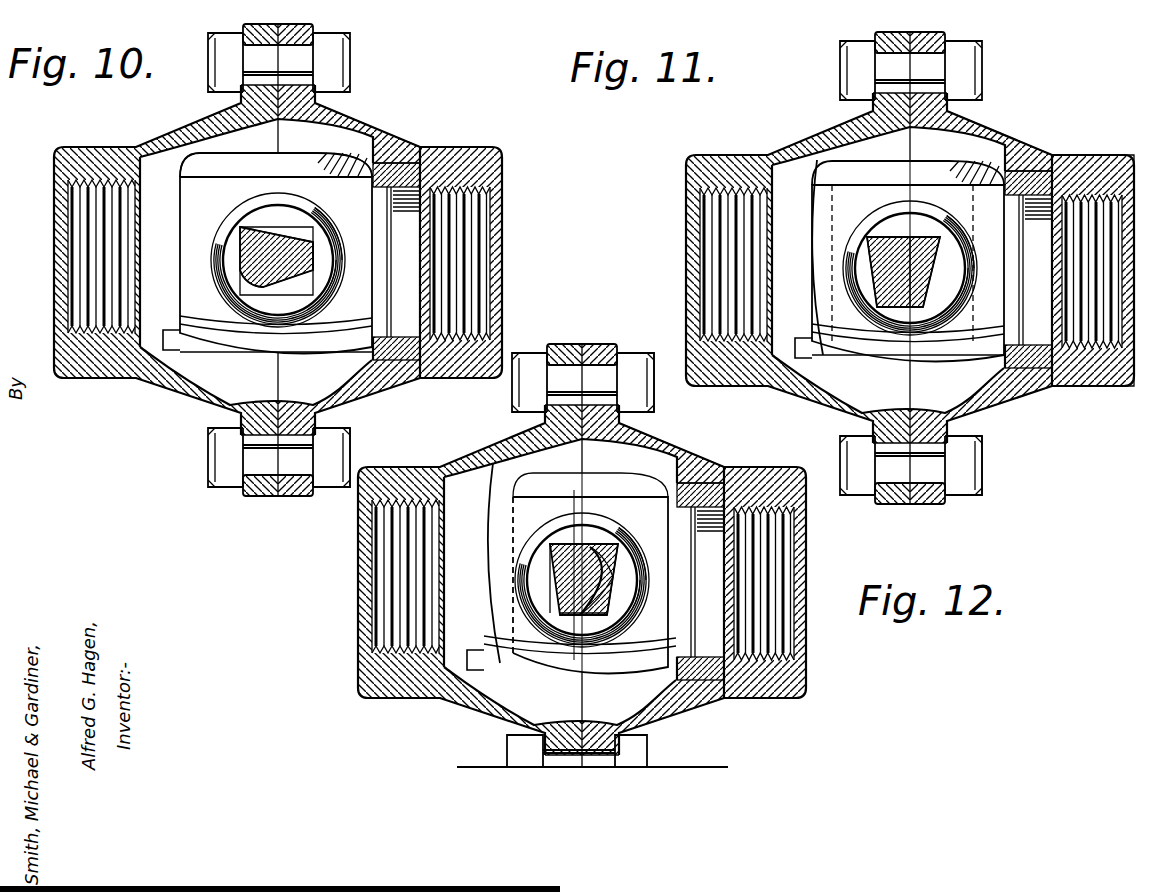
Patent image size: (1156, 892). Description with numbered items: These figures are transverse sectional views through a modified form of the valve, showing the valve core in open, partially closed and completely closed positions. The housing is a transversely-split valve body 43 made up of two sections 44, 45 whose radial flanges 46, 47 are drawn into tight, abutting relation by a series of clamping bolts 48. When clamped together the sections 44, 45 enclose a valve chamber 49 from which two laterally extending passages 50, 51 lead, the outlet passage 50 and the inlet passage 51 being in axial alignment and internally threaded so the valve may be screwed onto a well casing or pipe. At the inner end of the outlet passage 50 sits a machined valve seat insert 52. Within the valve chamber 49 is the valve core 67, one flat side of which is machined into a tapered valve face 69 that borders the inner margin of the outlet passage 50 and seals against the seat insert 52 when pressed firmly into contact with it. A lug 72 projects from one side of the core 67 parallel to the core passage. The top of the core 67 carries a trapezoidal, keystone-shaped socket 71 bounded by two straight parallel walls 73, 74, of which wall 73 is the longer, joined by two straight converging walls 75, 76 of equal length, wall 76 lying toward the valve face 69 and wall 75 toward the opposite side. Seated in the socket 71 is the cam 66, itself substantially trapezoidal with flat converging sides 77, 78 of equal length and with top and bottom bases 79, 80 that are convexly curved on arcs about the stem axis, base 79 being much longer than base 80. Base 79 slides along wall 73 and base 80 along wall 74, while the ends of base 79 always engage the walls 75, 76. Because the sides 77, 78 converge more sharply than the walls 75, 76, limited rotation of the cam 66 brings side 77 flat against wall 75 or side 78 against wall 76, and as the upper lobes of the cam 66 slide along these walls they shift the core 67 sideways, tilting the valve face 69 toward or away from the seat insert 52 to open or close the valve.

In FIG. 10, the valve body 43 is at (400, 135).
In FIG. 11, the valve body 43 is at (1035, 145).
In FIG. 12, the valve body 43 is at (688, 447).
In FIG. 10, the valve body section 44 is at (353, 130).
In FIG. 11, the valve body section 44 is at (982, 135).
In FIG. 12, the valve body section 44 is at (660, 433).
In FIG. 10, the valve body section 45 is at (200, 122).
In FIG. 11, the valve body section 45 is at (827, 138).
In FIG. 12, the valve body section 45 is at (480, 442).
In FIG. 10, the radial flange 46 is at (233, 497).
In FIG. 11, the radial flange 46 is at (893, 503).
In FIG. 12, the radial flange 46 is at (553, 345).
In FIG. 10, the radial flange 47 is at (272, 495).
In FIG. 11, the radial flange 47 is at (945, 503).
In FIG. 12, the radial flange 47 is at (612, 345).
In FIG. 10, the clamping bolt 48 is at (330, 62).
In FIG. 11, the clamping bolt 48 is at (963, 70).
In FIG. 12, the clamping bolt 48 is at (602, 352).
In FIG. 11, the valve chamber 49 is at (995, 218).
In FIG. 10, the outlet passage 50 is at (460, 265).
In FIG. 11, the outlet passage 50 is at (1000, 270).
In FIG. 12, the outlet passage 50 is at (797, 572).
In FIG. 10, the inlet passage 51 is at (67, 260).
In FIG. 12, the inlet passage 51 is at (370, 580).
In FIG. 10, the valve seat insert 52 is at (413, 167).
In FIG. 11, the valve seat insert 52 is at (1043, 177).
In FIG. 12, the valve seat insert 52 is at (727, 470).
In FIG. 10, the cam 66 is at (328, 232).
In FIG. 11, the cam 66 is at (940, 305).
In FIG. 12, the cam 66 is at (610, 575).
In FIG. 10, the valve core 67 is at (340, 323).
In FIG. 11, the valve core 67 is at (953, 363).
In FIG. 12, the valve core 67 is at (557, 667).
In FIG. 10, the valve face 69 is at (276, 163).
In FIG. 12, the valve face 69 is at (670, 532).
In FIG. 10, the socket 71 is at (276, 368).
In FIG. 11, the socket 71 is at (892, 308).
In FIG. 12, the socket 71 is at (607, 617).
In FIG. 10, the lug 72 is at (170, 330).
In FIG. 11, the lug 72 is at (817, 167).
In FIG. 12, the lug 72 is at (503, 480).
In FIG. 10, the socket wall 73 is at (240, 257).
In FIG. 11, the socket wall 73 is at (882, 237).
In FIG. 12, the socket wall 73 is at (590, 547).
In FIG. 10, the socket wall 74 is at (313, 263).
In FIG. 11, the socket wall 74 is at (910, 308).
In FIG. 12, the socket wall 74 is at (593, 617).
In FIG. 10, the socket wall 75 is at (258, 297).
In FIG. 11, the socket wall 75 is at (840, 288).
In FIG. 12, the socket wall 75 is at (550, 575).
In FIG. 10, the socket wall 76 is at (258, 243).
In FIG. 11, the socket wall 76 is at (940, 237).
In FIG. 12, the socket wall 76 is at (617, 565).
In FIG. 10, the cam side 77 is at (303, 277).
In FIG. 11, the cam side 77 is at (877, 305).
In FIG. 12, the cam side 77 is at (557, 590).
In FIG. 10, the cam side 78 is at (288, 238).
In FIG. 11, the cam side 78 is at (932, 303).
In FIG. 12, the cam side 78 is at (610, 602).
In FIG. 10, the cam base 79 is at (245, 285).
In FIG. 11, the cam base 79 is at (865, 233).
In FIG. 12, the cam base 79 is at (617, 550).
In FIG. 10, the cam base 80 is at (313, 247).
In FIG. 11, the cam base 80 is at (933, 362).
In FIG. 12, the cam base 80 is at (567, 615).